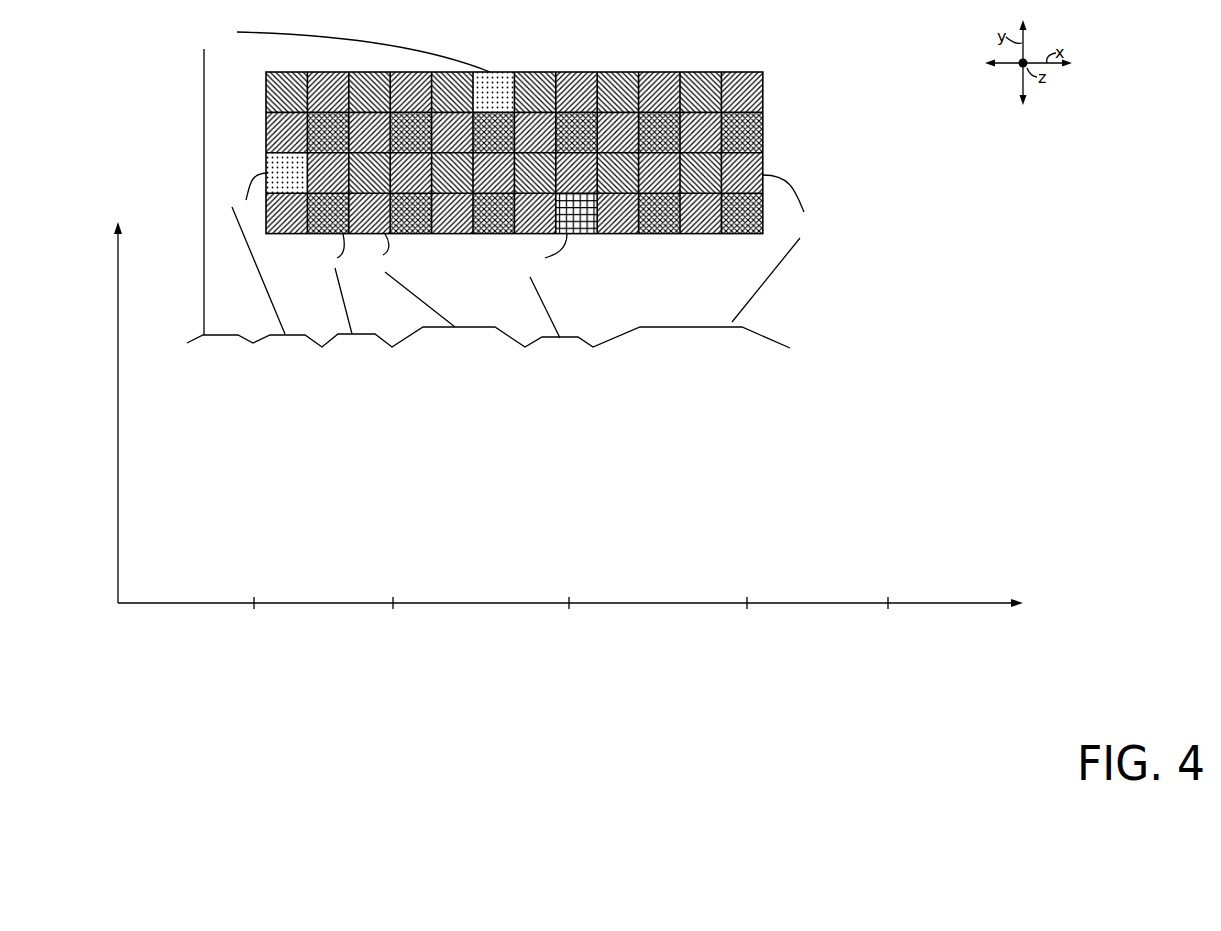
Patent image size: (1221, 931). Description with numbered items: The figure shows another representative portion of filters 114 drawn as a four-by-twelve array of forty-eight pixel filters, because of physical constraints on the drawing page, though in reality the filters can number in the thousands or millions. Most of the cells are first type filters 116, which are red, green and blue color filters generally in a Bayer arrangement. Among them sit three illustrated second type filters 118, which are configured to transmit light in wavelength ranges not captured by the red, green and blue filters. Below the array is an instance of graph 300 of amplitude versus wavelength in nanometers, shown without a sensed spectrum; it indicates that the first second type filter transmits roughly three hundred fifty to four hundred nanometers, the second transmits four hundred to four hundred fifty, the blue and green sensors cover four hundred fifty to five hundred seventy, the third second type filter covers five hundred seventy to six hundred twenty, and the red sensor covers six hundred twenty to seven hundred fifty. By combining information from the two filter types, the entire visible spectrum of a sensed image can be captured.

The filters 114 is at (608, 153).
The first type filters 116 is at (771, 163).
The second type filters 118 is at (496, 64).
The graph 300 is at (537, 359).